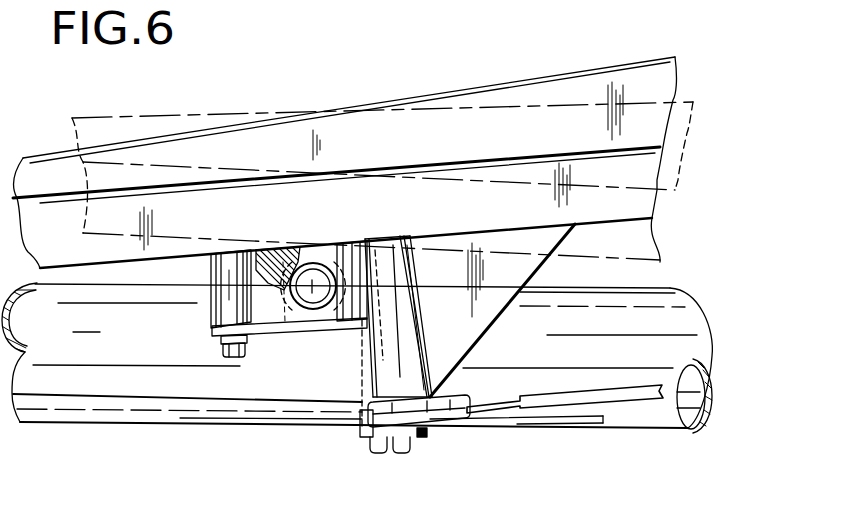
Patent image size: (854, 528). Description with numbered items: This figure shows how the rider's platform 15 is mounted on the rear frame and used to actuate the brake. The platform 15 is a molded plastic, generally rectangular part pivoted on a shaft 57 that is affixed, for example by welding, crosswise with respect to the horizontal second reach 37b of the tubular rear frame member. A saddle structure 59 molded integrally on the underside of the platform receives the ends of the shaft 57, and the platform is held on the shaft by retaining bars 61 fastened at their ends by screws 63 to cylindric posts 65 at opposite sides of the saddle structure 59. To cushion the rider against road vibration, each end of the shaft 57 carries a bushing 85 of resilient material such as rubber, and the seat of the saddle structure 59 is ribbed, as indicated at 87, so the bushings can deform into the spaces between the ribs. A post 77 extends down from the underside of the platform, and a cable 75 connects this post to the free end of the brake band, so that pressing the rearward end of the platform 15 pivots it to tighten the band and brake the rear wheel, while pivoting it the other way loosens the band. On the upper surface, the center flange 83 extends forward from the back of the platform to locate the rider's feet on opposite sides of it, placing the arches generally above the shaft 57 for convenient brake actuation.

The rider's platform 15 is at (42, 157).
The center flange 83 is at (570, 72).
The second reach 37b is at (134, 427).
The cylindric posts 65 is at (212, 312).
The retaining bars 61 is at (215, 332).
The screws 63 is at (230, 356).
The saddle structure 59 is at (262, 320).
The shaft 57 is at (321, 278).
The bushing 85 is at (317, 312).
The ribs 87 is at (295, 324).
The post 77 is at (425, 345).
The cable 75 is at (557, 395).